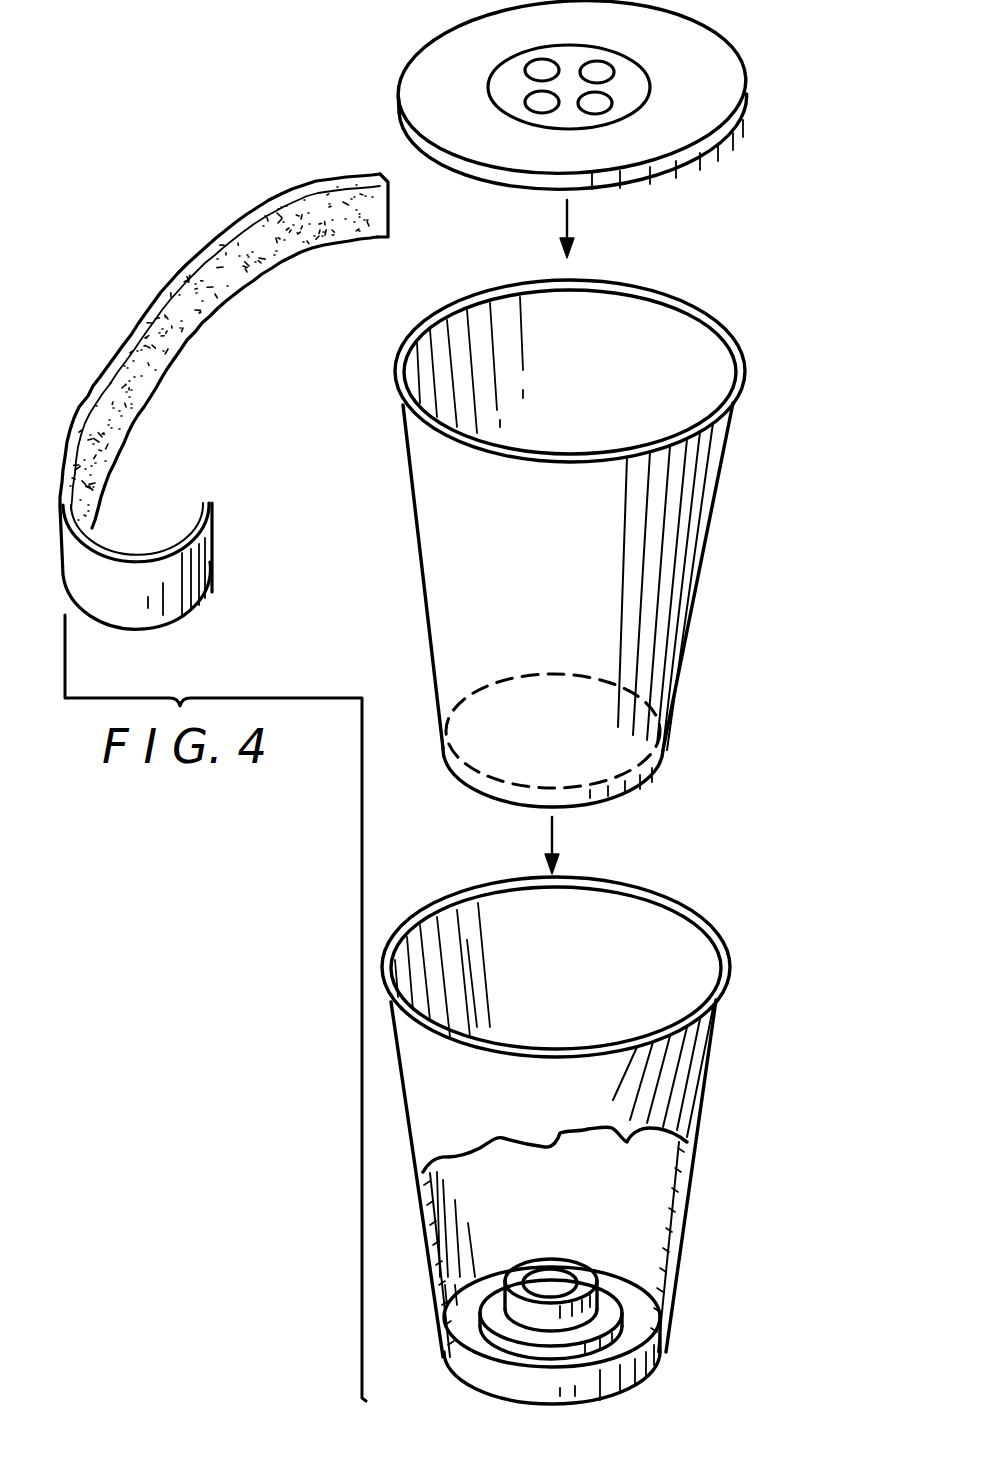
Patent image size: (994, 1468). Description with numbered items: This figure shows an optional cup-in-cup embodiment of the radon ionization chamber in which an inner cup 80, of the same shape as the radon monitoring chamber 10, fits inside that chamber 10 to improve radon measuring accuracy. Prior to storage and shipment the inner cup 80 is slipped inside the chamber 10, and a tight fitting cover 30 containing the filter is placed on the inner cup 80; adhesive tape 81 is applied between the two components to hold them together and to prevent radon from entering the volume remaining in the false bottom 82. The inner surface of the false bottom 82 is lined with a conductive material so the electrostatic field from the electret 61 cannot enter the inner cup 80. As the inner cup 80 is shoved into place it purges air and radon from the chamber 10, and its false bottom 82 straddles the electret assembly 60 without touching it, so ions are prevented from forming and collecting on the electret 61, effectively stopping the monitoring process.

The radon monitoring chamber 10 is at (690, 1092).
The cover 30 is at (750, 91).
The electret assembly 60 is at (612, 1311).
The electret 61 is at (568, 1282).
The inner cup 80 is at (705, 548).
The adhesive tape 81 is at (226, 223).
The false bottom 82 is at (656, 762).